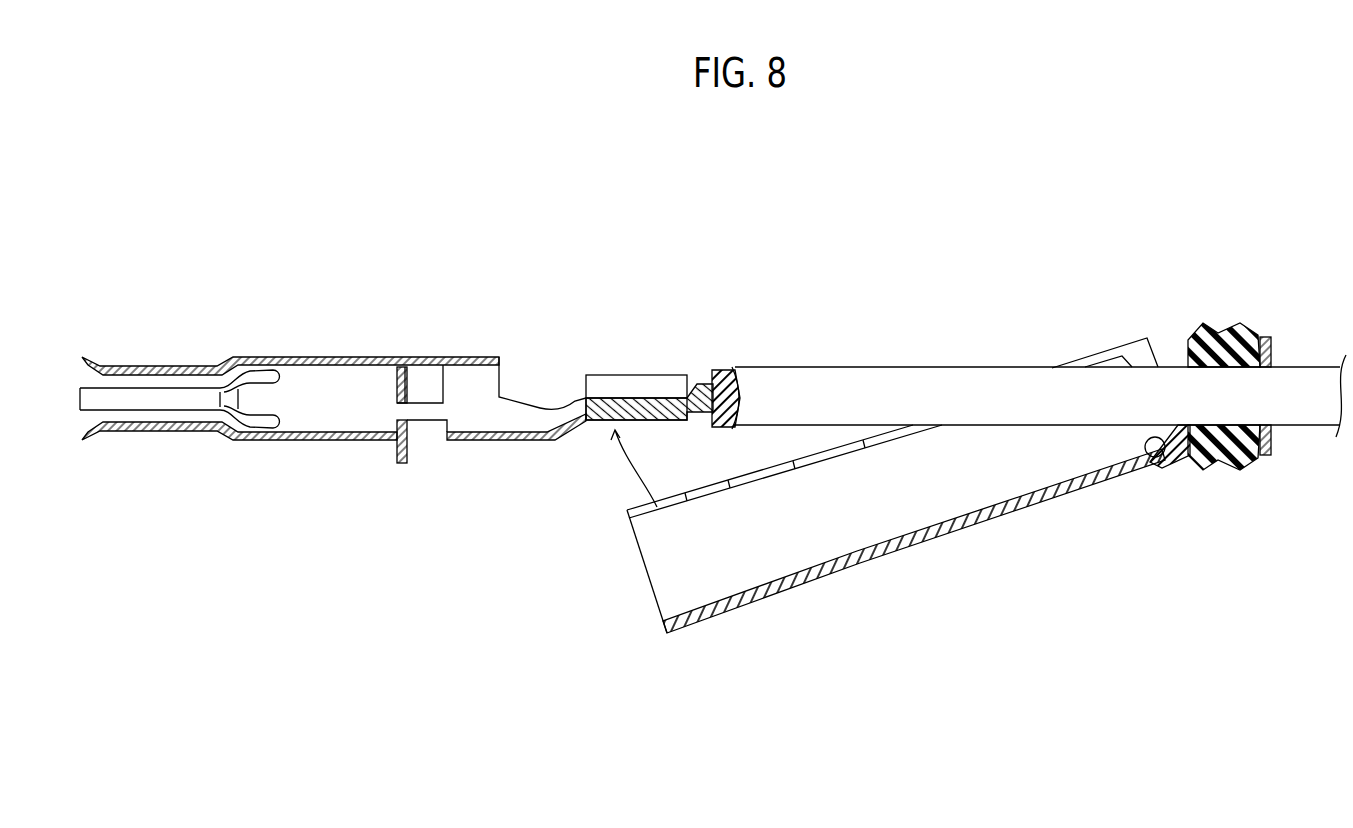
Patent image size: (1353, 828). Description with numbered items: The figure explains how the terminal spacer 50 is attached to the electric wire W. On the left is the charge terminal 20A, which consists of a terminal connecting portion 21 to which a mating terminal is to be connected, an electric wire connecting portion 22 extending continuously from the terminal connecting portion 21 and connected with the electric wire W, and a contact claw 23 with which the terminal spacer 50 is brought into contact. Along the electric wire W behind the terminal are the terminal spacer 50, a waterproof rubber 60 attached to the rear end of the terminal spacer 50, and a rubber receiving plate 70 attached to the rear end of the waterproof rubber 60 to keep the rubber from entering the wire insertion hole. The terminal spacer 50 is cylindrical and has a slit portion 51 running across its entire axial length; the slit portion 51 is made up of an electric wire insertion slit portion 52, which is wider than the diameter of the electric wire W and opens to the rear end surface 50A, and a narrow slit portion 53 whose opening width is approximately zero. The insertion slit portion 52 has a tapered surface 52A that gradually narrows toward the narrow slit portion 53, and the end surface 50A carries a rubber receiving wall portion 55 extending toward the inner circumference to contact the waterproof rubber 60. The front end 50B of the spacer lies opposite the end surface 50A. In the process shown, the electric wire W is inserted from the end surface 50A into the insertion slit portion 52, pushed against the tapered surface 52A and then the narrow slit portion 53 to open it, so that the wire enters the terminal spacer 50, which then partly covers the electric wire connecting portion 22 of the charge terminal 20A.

The charge terminal 20A is at (383, 387).
The terminal connecting portion 21 is at (332, 357).
The electric wire connecting portion 22 is at (613, 378).
The contact claw 23 is at (397, 462).
The electric wire W is at (780, 380).
The terminal spacer 50 is at (900, 468).
The end surface 50A is at (1153, 345).
The front end of housing 50B is at (647, 580).
The slit portion 51 is at (784, 495).
The electric wire insertion slit portion 52 is at (835, 484).
The tapered surface 52A is at (765, 470).
The narrow slit portion 53 is at (685, 497).
The rubber receiving wall portion 55 is at (1145, 427).
The waterproof rubber 60 is at (1217, 332).
The rubber receiving plate 70 is at (1262, 335).